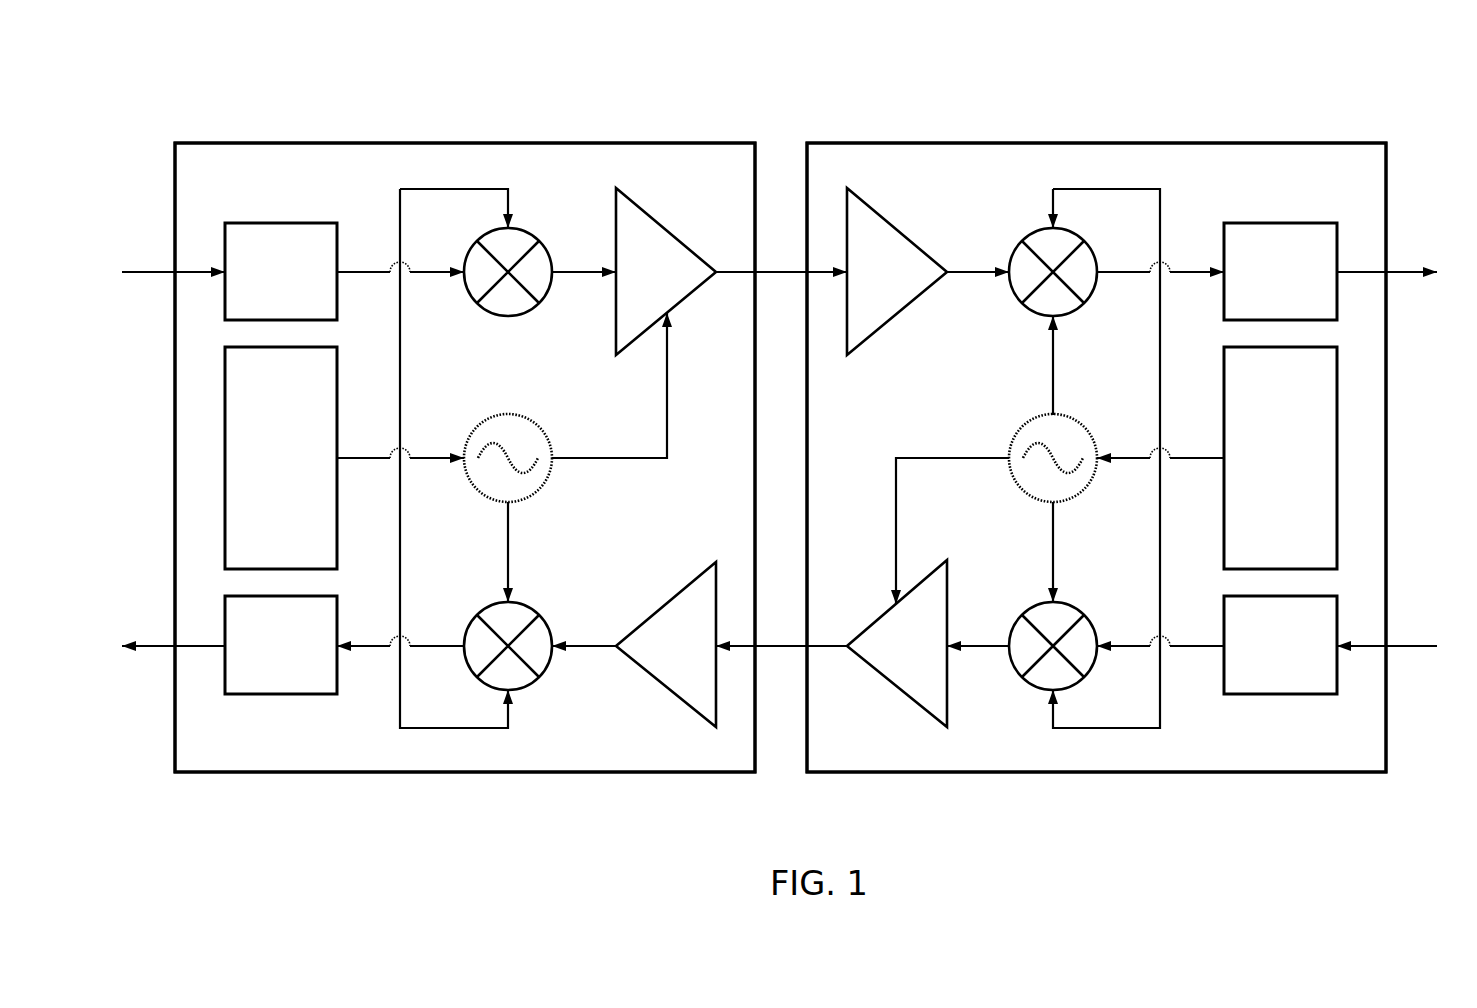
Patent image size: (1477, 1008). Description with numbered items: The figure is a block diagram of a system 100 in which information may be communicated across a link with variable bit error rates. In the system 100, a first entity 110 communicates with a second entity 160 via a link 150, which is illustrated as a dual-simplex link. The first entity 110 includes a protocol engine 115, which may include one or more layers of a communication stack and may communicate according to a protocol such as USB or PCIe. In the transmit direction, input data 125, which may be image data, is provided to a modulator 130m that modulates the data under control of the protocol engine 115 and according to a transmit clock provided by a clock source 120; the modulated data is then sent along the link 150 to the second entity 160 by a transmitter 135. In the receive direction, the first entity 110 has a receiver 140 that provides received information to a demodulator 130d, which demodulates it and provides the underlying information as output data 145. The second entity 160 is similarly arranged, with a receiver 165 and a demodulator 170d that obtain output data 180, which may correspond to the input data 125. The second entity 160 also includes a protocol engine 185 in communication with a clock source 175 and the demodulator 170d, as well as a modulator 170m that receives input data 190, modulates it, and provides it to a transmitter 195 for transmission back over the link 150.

The system 100 is at (197, 54).
The first entity 110 is at (245, 143).
The protocol engine 115 is at (225, 458).
The clock source 120 is at (533, 424).
The input data 125 is at (292, 223).
The modulator 130m is at (535, 245).
The demodulator 130d is at (533, 611).
The transmitter 135 is at (668, 228).
The receiver 140 is at (668, 688).
The output data 145 is at (292, 694).
The link 150 is at (765, 270).
The second entity 160 is at (878, 143).
The receiver 165 is at (897, 229).
The demodulator 170d is at (1027, 238).
The modulator 170m is at (1027, 611).
The clock source 175 is at (1027, 423).
The output data 180 is at (1266, 223).
The protocol engine 185 is at (1337, 458).
The input data 190 is at (1266, 694).
The transmitter 195 is at (898, 688).